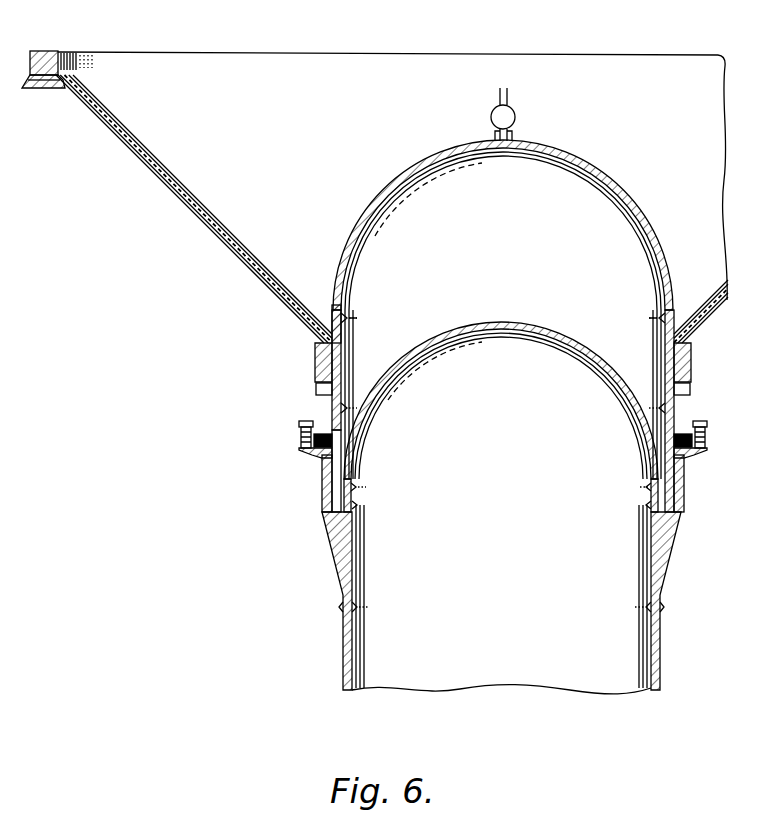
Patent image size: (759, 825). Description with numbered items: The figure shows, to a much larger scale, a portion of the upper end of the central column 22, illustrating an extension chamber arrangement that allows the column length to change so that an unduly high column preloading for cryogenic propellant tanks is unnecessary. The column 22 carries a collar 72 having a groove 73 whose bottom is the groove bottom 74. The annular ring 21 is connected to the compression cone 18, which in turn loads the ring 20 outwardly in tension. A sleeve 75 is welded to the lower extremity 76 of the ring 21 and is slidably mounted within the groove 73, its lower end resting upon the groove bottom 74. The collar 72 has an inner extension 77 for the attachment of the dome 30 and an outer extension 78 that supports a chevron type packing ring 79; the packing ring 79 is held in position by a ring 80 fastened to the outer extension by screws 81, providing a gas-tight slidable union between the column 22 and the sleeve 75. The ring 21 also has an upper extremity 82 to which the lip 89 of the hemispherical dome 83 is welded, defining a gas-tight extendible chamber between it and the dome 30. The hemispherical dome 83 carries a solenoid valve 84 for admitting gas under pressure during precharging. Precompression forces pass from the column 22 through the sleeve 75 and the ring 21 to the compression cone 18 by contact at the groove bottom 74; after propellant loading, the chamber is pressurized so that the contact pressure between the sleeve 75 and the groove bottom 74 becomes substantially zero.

The ring 20 is at (45, 50).
The compression cone 18 is at (248, 270).
The solenoid valve 84 is at (515, 112).
The hemispherical dome 83 is at (377, 196).
The lip 89 is at (332, 292).
The upper extremity 82 is at (333, 318).
The dome 30 is at (574, 340).
The annular ring 21 is at (314, 360).
The lower extremity 76 is at (333, 393).
The sleeve 75 is at (340, 410).
The screws 81 is at (305, 426).
The ring 80 is at (298, 433).
The chevron type packing ring 79 is at (310, 452).
The outer extension 78 is at (322, 487).
The inner extension 77 is at (358, 488).
The groove 73 is at (355, 505).
The groove bottom 74 is at (330, 530).
The collar 72 is at (343, 585).
The column 22 is at (343, 655).